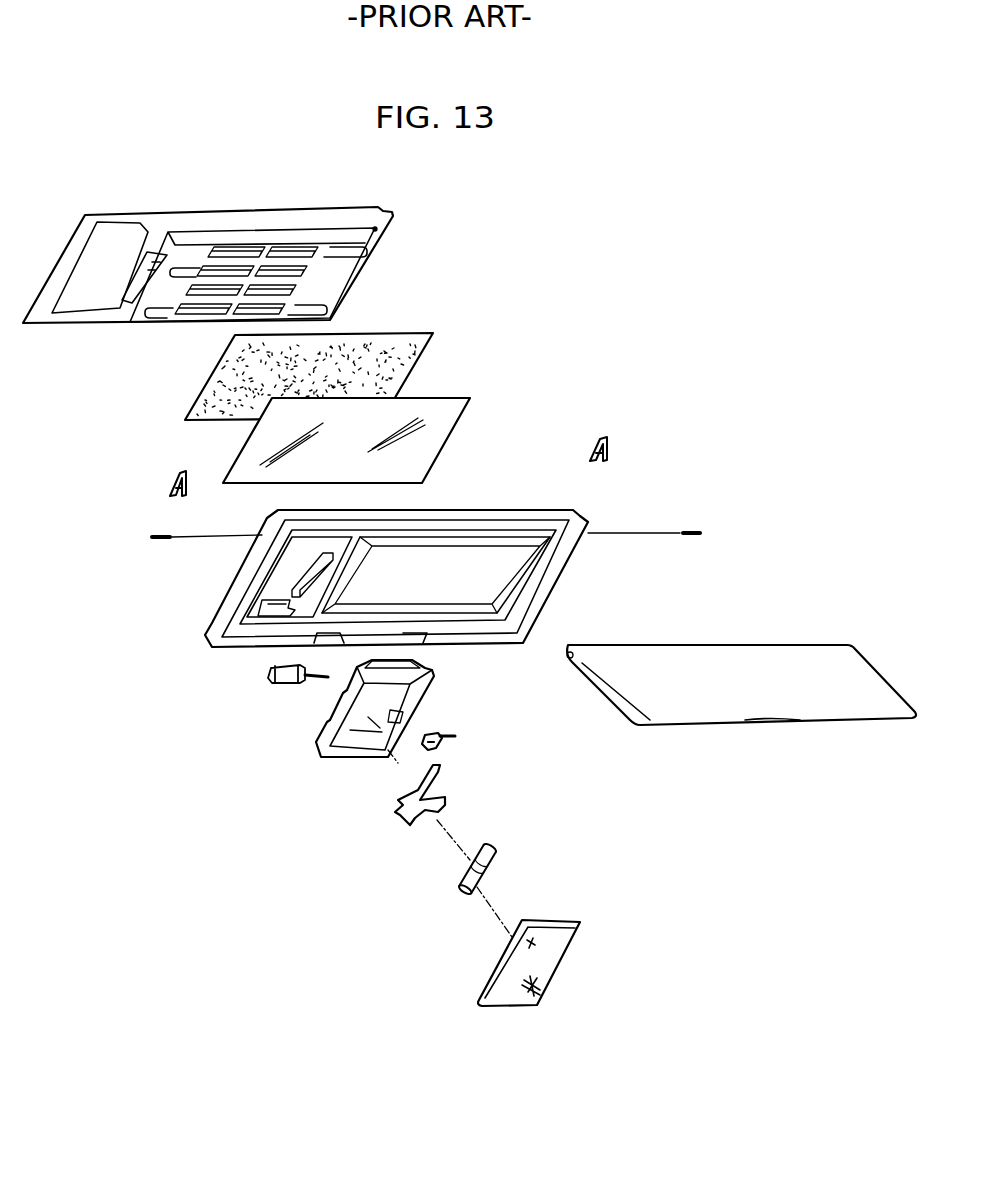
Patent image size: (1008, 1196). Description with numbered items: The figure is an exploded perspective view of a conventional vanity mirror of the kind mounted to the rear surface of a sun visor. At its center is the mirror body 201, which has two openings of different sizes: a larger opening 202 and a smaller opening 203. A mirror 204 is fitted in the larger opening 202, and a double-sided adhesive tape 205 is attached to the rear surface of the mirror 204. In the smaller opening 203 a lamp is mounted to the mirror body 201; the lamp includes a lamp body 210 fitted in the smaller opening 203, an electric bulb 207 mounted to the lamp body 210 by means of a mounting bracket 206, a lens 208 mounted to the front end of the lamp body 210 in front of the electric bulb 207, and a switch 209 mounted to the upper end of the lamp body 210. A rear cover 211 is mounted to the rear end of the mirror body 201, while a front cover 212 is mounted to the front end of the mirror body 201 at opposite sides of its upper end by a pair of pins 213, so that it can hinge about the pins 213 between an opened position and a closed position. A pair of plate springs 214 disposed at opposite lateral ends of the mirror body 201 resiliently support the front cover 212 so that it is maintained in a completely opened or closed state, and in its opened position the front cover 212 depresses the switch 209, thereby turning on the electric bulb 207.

The mirror body 201 is at (590, 520).
The opening 202 is at (463, 580).
The opening 203 is at (285, 575).
The mirror 204 is at (450, 428).
The double-sided adhesive tape 205 is at (432, 333).
The mounting bracket 206 is at (447, 792).
The electric bulb 207 is at (485, 867).
The lens 208 is at (560, 952).
The switch 209 is at (270, 684).
The lamp body 210 is at (323, 745).
The rear cover 211 is at (375, 230).
The front cover 212 is at (795, 663).
The pins 213 is at (153, 540).
The plate springs 214 is at (167, 483).